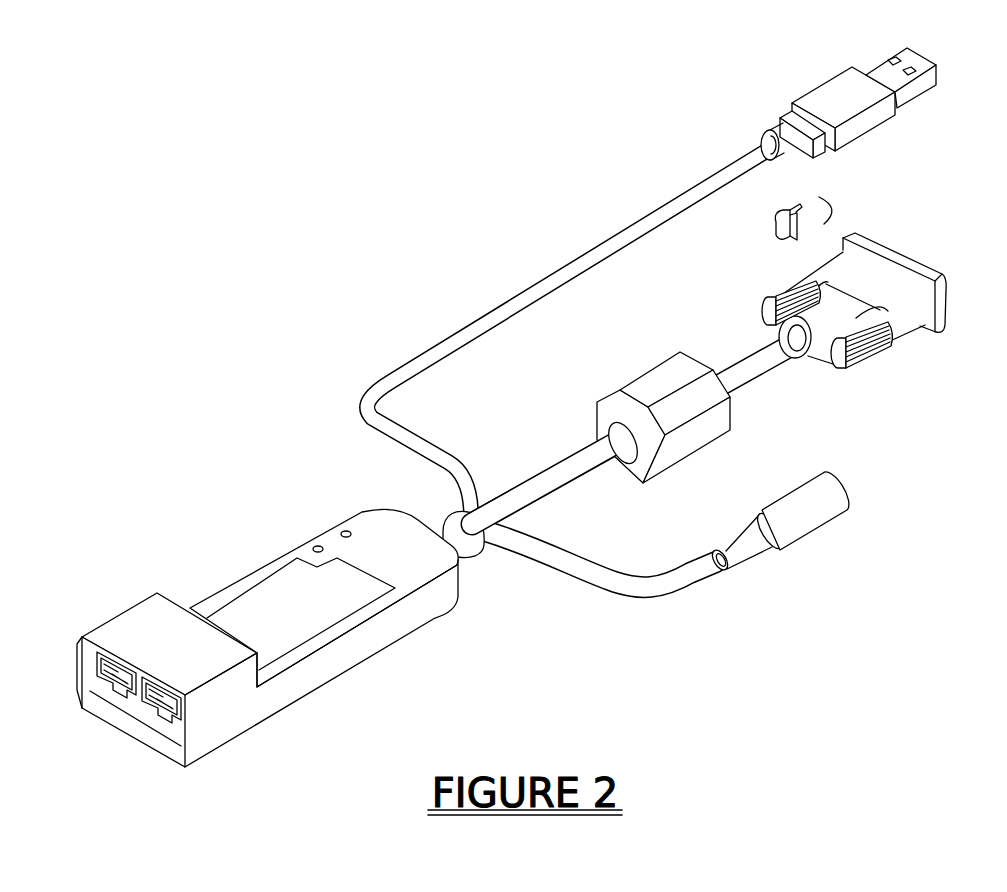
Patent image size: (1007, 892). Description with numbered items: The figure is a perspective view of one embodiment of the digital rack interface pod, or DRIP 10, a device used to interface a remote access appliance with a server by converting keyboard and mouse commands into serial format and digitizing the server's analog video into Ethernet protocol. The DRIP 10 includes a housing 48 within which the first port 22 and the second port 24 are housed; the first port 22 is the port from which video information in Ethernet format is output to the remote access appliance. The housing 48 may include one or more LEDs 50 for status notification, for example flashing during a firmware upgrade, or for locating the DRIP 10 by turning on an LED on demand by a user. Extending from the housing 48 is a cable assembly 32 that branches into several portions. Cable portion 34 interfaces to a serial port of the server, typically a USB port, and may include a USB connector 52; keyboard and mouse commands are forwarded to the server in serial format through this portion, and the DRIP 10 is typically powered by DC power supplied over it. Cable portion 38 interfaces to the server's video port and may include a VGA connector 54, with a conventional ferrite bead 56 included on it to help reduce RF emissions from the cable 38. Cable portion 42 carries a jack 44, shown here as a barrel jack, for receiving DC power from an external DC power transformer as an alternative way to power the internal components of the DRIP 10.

The digital rack interface pod (DRIP) 10 is at (352, 297).
The first port 22 is at (170, 708).
The second port 24 is at (115, 677).
The cable assembly 32 is at (448, 523).
The cable portion 34 is at (690, 195).
The cable portion 38 is at (567, 466).
The cable portion 42 is at (645, 592).
The jack 44 is at (810, 523).
The housing 48 is at (378, 648).
The LEDs 50 is at (345, 531).
The USB connector 52 is at (832, 92).
The VGA connector 54 is at (872, 283).
The ferrite bead 56 is at (652, 382).